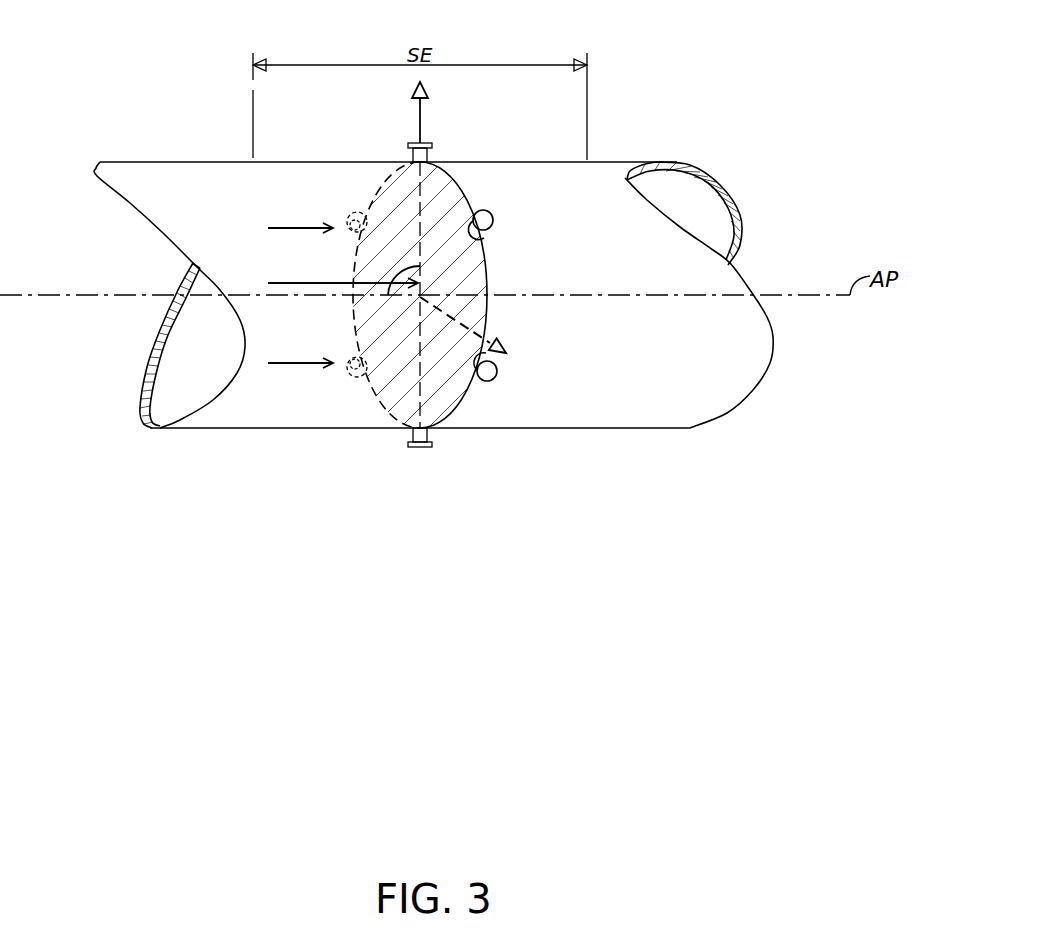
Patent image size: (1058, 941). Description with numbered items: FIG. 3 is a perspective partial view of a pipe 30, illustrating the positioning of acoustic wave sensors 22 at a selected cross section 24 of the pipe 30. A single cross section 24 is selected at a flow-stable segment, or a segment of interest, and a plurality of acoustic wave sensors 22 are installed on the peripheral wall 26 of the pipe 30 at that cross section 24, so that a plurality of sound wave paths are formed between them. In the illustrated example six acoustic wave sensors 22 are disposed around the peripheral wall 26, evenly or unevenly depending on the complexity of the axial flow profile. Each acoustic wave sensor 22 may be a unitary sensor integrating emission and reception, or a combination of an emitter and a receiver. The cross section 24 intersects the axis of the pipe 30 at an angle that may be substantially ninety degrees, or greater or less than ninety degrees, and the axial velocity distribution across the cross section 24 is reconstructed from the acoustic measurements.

The acoustic wave sensor 22 is at (348, 214).
The cross section 24 is at (403, 393).
The peripheral wall 26 is at (555, 428).
The pipe 30 is at (621, 138).